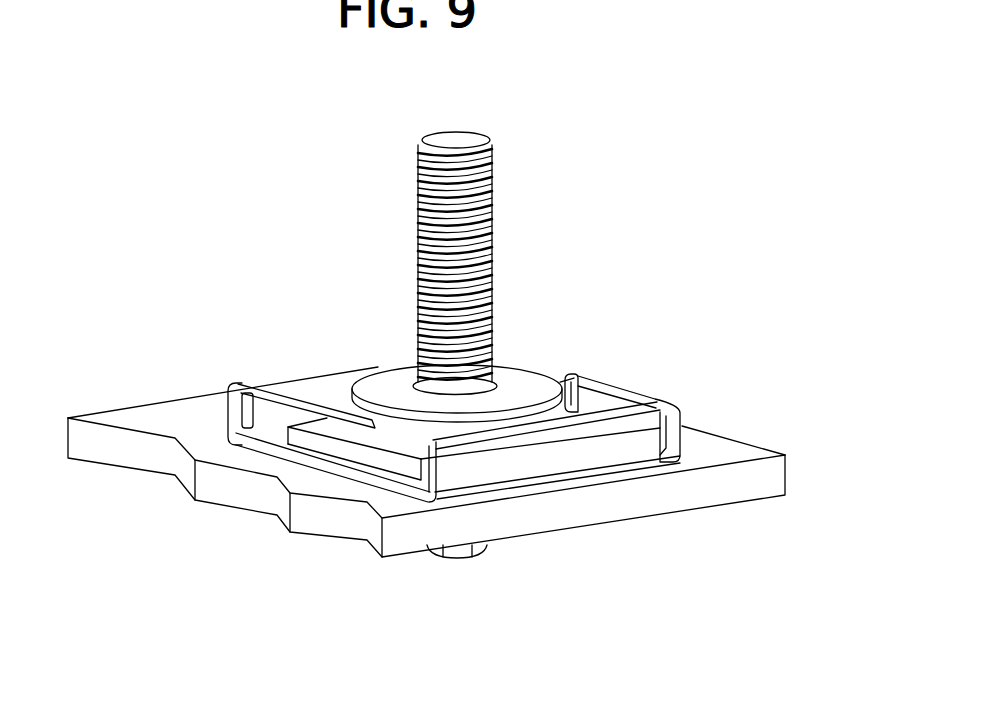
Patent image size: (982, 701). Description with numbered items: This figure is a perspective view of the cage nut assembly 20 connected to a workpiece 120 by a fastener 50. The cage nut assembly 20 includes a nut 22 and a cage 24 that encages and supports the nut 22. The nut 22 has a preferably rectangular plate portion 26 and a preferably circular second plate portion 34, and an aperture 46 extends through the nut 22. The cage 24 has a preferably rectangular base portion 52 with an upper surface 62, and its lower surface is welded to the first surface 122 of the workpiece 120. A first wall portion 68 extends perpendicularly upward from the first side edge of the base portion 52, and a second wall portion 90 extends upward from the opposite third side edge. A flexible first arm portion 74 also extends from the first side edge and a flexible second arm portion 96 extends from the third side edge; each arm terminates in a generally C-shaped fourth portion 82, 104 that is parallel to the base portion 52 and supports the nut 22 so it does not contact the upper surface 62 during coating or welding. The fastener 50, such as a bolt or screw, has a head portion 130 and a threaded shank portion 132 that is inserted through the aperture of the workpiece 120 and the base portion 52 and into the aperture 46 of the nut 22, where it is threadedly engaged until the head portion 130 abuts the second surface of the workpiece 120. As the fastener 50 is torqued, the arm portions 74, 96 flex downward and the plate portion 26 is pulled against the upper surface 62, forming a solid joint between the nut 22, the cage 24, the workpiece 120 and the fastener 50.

The cage nut assembly 20 is at (350, 360).
The nut 22 is at (553, 380).
The cage 24 is at (615, 438).
The plate portion 26 is at (407, 465).
The second plate portion 34 is at (388, 378).
The aperture 46 is at (508, 385).
The fastener 50 is at (492, 164).
The base portion 52 is at (264, 449).
The upper surface 62 is at (283, 440).
The first wall portion 68 is at (290, 378).
The first arm portion 74 is at (240, 388).
The fourth portion 82 is at (405, 430).
The second wall portion 90 is at (548, 462).
The second arm portion 96 is at (640, 389).
The fourth portion 104 is at (600, 400).
The workpiece 120 is at (735, 452).
The first surface 122 is at (700, 432).
The head portion 130 is at (475, 560).
The threaded shank portion 132 is at (494, 232).